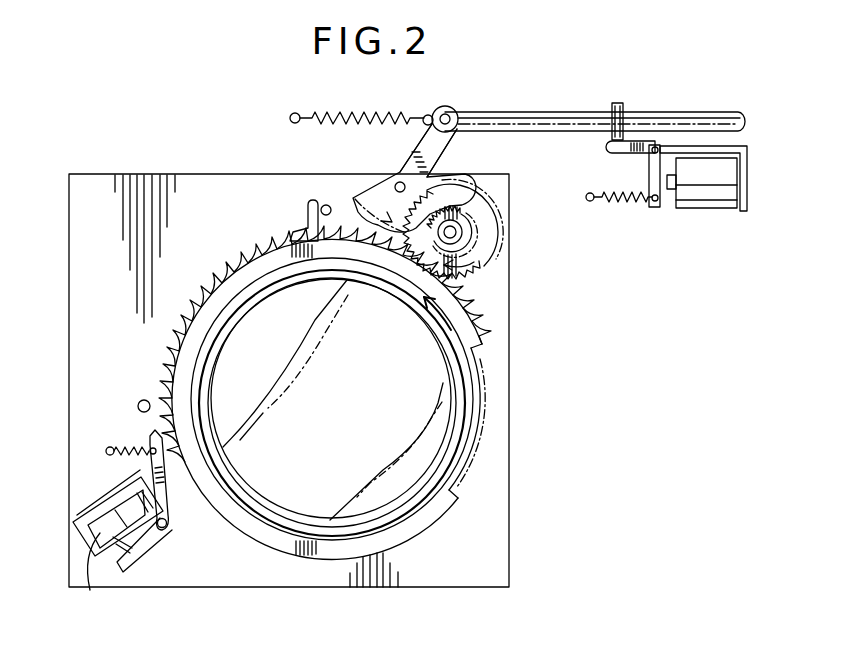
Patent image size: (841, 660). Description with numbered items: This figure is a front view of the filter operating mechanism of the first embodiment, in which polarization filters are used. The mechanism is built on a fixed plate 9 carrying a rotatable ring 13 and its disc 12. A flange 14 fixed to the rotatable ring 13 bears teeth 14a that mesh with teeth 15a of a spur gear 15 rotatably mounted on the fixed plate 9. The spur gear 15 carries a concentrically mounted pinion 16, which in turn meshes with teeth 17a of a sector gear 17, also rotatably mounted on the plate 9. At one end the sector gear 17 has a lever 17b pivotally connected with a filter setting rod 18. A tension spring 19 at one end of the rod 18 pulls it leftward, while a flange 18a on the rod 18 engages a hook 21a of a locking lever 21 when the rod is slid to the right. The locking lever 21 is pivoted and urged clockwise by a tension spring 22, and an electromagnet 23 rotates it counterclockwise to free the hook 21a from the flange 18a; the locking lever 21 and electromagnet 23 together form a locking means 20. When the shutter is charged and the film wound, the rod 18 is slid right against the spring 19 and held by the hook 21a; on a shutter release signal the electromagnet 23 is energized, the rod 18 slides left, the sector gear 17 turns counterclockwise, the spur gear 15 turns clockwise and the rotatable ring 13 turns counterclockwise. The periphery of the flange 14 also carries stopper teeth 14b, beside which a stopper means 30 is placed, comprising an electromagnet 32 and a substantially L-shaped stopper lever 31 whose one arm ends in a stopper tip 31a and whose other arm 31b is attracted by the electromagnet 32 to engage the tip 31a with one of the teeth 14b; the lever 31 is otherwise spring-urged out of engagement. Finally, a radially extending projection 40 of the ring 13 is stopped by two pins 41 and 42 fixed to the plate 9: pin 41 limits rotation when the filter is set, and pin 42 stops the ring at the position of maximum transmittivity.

The fixed plate 9 is at (183, 178).
The disc 12 is at (390, 483).
The rotatable ring 13 is at (447, 352).
The flange 14 is at (480, 372).
The teeth 14a is at (466, 325).
The stopper teeth 14b is at (240, 258).
The spur gear 15 is at (482, 233).
The teeth 15a is at (470, 278).
The pinion 16 is at (458, 210).
The sector gear 17 is at (386, 195).
The teeth 17a is at (475, 192).
The lever 17b is at (437, 145).
The filter setting rod 18 is at (553, 112).
The flange 18a is at (620, 104).
The tension spring 19 is at (367, 112).
The locking means 20 is at (709, 222).
The locking lever 21 is at (660, 192).
The hook 21a is at (606, 145).
The tension spring 22 is at (612, 200).
The electromagnet 23 is at (712, 196).
The stopper means 30 is at (105, 491).
The stopper lever 31 is at (182, 502).
The stopper tip 31a is at (131, 437).
The arm 31b is at (140, 545).
The electromagnet 32 is at (90, 576).
The radially extending projection 40 is at (308, 208).
The pin 41 is at (327, 205).
The pin 42 is at (141, 400).